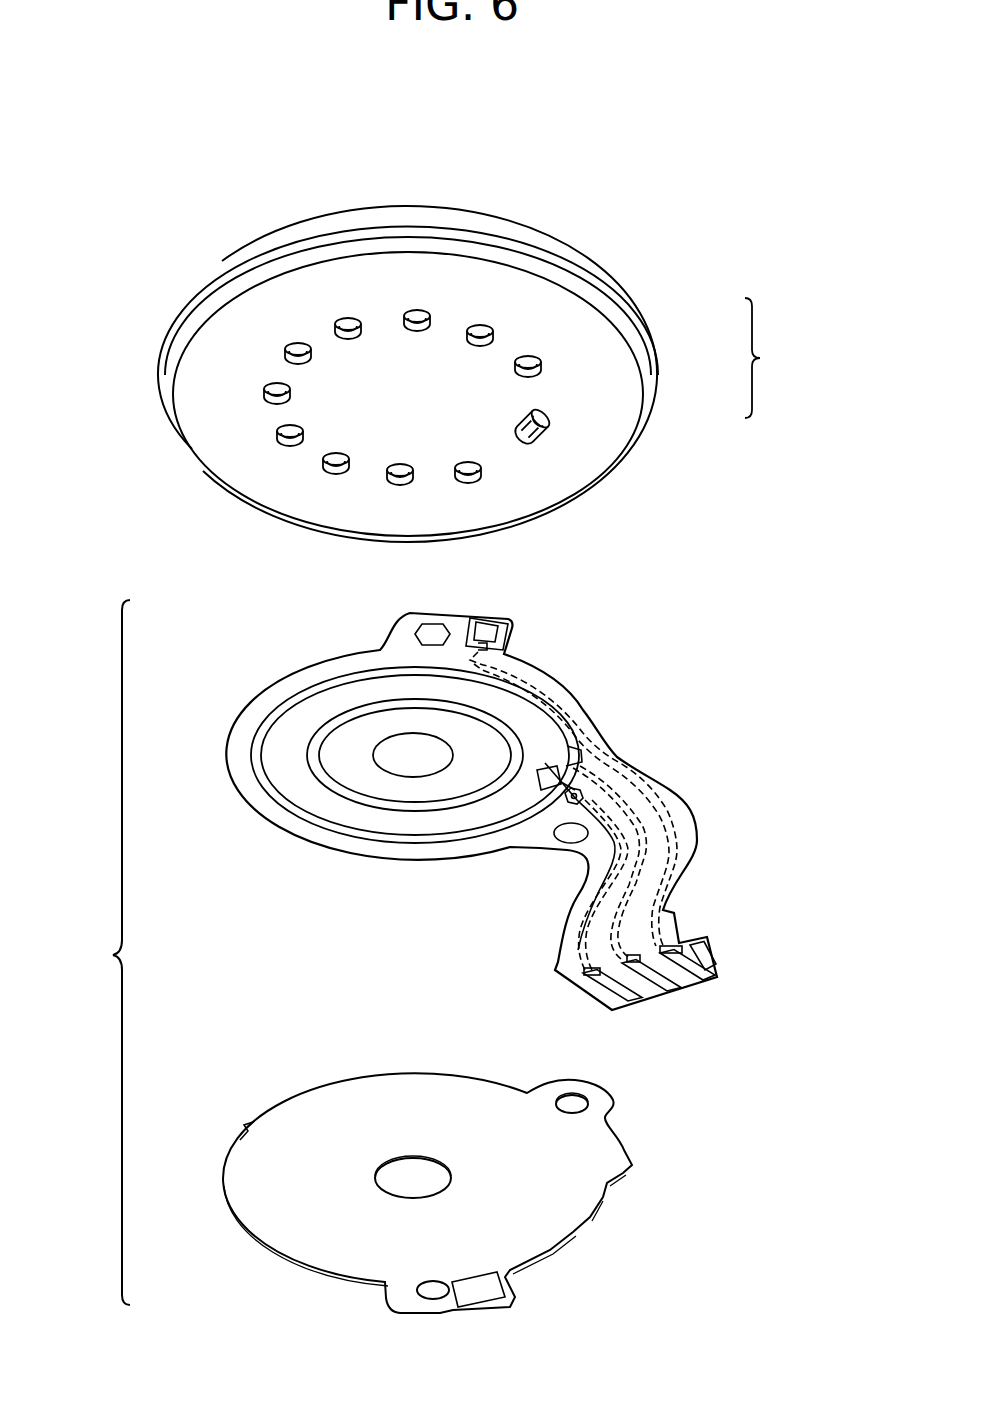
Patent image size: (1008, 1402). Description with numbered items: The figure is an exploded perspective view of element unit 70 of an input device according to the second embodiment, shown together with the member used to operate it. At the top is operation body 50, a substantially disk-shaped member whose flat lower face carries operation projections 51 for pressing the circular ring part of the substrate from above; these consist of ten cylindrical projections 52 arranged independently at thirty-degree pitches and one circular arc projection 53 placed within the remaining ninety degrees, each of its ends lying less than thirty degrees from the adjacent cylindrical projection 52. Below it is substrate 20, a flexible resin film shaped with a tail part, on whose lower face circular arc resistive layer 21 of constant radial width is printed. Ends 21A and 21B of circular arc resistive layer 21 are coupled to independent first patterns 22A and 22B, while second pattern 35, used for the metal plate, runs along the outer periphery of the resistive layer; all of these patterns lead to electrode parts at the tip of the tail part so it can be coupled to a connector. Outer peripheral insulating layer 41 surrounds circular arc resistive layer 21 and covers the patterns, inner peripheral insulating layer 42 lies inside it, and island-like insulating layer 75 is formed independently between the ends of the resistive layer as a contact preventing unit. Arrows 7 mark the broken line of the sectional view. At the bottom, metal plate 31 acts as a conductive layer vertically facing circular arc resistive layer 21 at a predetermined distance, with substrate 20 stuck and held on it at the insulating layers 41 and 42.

The operation body 50 is at (537, 237).
The operation projections 51 is at (539, 391).
The cylindrical projections 52 is at (543, 362).
The circular arc projection 53 is at (550, 427).
The element unit 70 is at (439, 956).
The substrate 20 is at (262, 688).
The circular arc resistive layer 21 is at (290, 780).
The end of circular arc resistive layer 21A is at (538, 792).
The end of circular arc resistive layer 21B is at (550, 757).
The arrows 7 is at (530, 735).
The outer peripheral insulating layer 41 is at (425, 855).
The inner peripheral insulating layer 42 is at (380, 785).
The island-like insulating layer 75 is at (545, 780).
The second pattern 35 is at (650, 793).
The first pattern 22A is at (605, 883).
The first pattern 22B is at (645, 837).
The metal plate 31 is at (295, 1122).